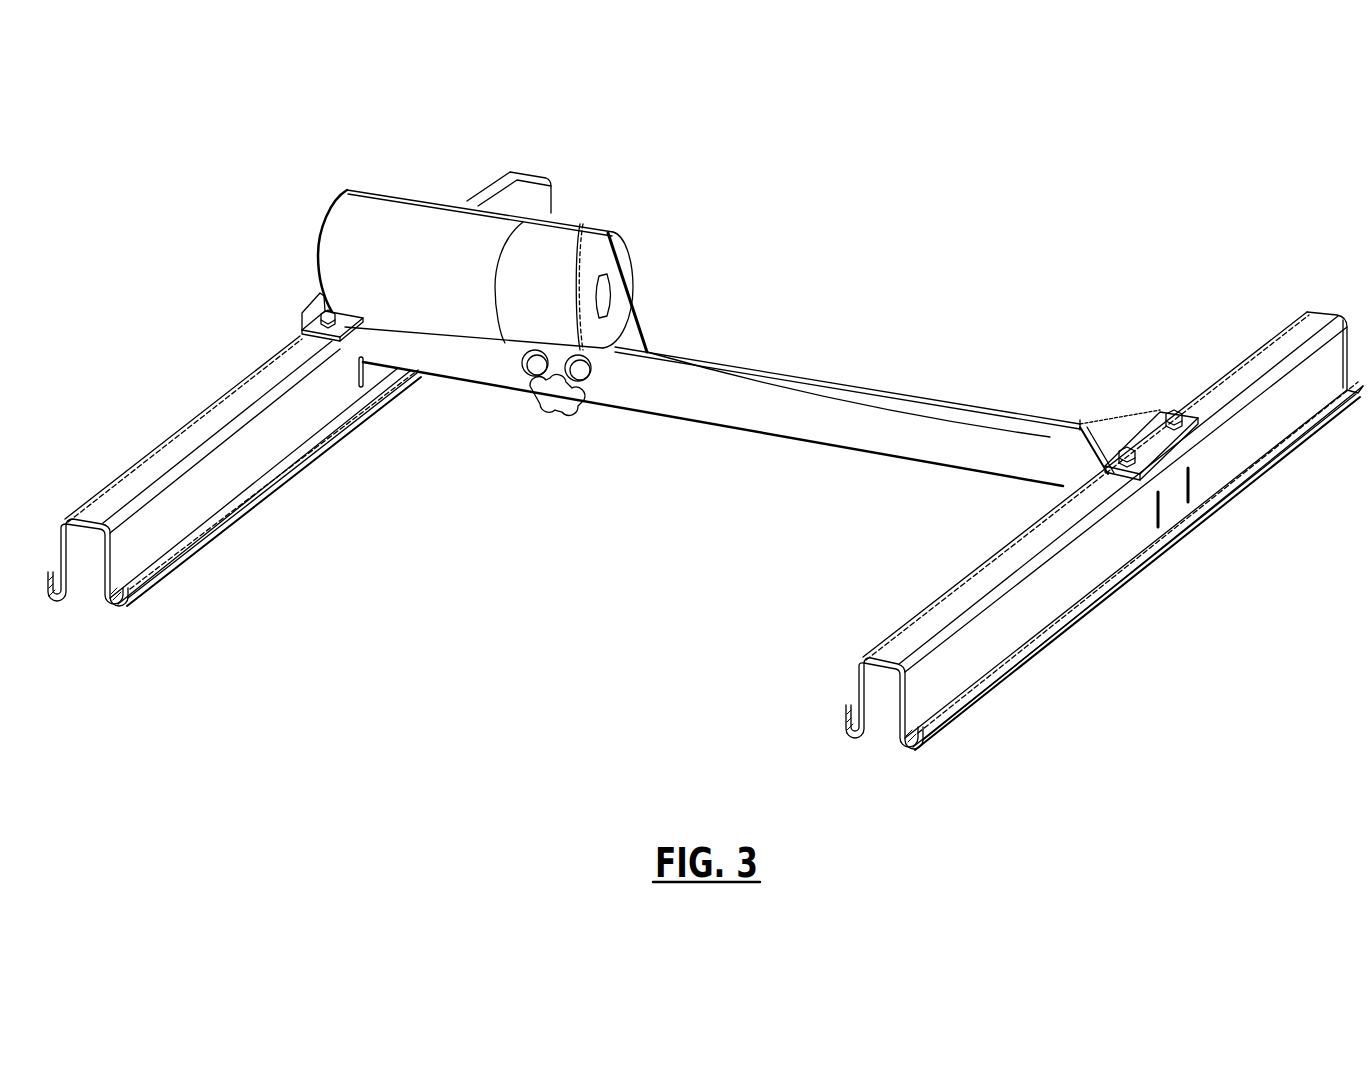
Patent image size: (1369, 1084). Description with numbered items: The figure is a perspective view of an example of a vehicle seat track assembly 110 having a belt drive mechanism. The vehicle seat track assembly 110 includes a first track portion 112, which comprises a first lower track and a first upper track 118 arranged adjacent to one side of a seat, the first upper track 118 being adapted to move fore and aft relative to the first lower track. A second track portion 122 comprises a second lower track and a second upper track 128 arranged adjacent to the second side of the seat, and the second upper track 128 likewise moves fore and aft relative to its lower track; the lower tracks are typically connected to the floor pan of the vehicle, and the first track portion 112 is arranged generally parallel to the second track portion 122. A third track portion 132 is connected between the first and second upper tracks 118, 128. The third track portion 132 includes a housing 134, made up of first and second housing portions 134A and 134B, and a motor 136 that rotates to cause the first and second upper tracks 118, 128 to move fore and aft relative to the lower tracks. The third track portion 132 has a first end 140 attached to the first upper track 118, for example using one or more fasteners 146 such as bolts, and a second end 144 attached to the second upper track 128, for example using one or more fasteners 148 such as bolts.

The vehicle seat track assembly 110 is at (869, 207).
The first track portion 112 is at (319, 514).
The first upper track 118 is at (173, 430).
The second track portion 122 is at (852, 613).
The second upper track 128 is at (978, 586).
The third track portion 132 is at (772, 346).
The housing 134 is at (606, 402).
The first housing portion 134A is at (851, 424).
The second housing portion 134B is at (870, 385).
The motor 136 is at (414, 230).
The first end 140 is at (279, 283).
The second end 144 is at (1135, 397).
The fasteners 146 is at (331, 305).
The fasteners 148 is at (1173, 405).